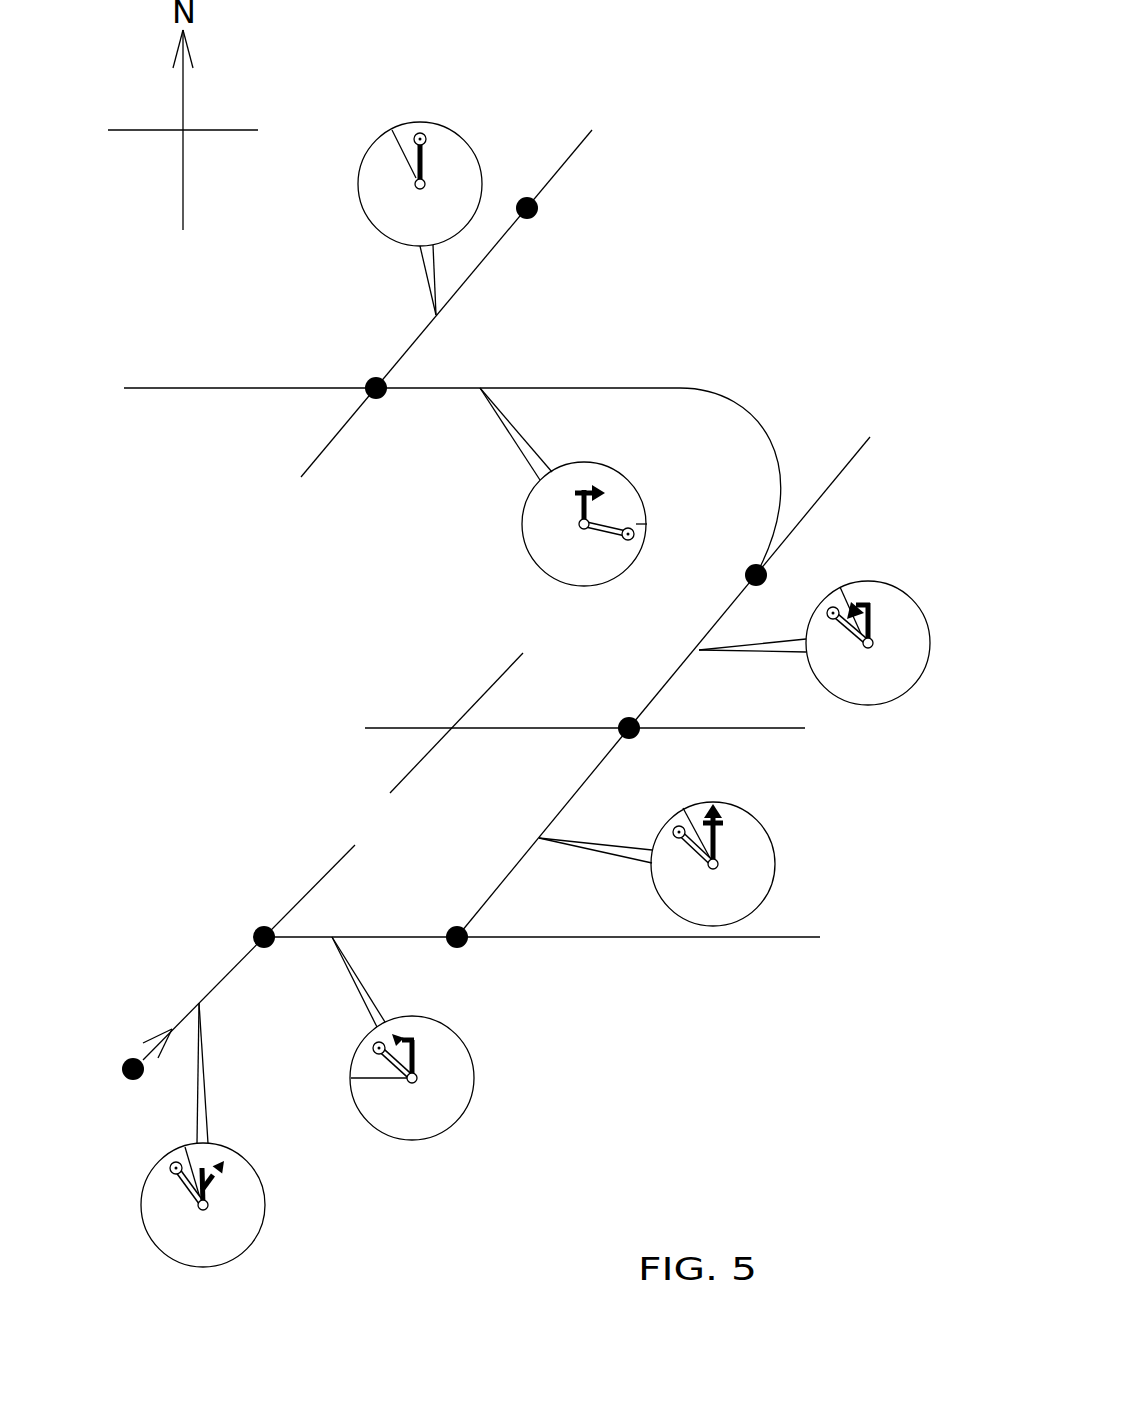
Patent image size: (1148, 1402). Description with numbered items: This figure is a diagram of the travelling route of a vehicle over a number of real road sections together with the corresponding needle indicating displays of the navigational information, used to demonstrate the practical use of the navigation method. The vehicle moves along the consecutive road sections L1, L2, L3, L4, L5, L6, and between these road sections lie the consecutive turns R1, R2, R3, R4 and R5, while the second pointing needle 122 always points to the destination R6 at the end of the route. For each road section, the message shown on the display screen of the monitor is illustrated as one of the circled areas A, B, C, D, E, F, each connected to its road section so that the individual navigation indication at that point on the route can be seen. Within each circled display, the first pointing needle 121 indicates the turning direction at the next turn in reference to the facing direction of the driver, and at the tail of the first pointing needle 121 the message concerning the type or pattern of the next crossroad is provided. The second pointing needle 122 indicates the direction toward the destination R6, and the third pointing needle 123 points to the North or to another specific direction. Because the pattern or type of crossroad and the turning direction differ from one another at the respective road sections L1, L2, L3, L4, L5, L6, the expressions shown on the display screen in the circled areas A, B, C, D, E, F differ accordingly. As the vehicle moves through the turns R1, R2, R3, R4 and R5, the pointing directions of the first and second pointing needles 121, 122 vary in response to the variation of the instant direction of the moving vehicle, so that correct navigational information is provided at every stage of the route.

The road section L1 is at (223, 975).
The road section L2 is at (372, 937).
The road section L3 is at (560, 808).
The road section L4 is at (733, 608).
The road section L5 is at (585, 388).
The road section L6 is at (467, 287).
The turn R1 is at (267, 952).
The turn R2 is at (457, 928).
The turn R3 is at (630, 720).
The turn R4 is at (751, 565).
The turn R5 is at (380, 400).
The destination R6 is at (538, 212).
The circled area A is at (252, 1161).
The circled area B is at (474, 1090).
The circled area C is at (775, 870).
The circled area D is at (898, 695).
The circled area E is at (522, 532).
The circled area F is at (363, 207).
The first pointing needle 121 is at (215, 1180).
The second pointing needle 122 is at (183, 1188).
The third pointing needle 123 is at (192, 1157).